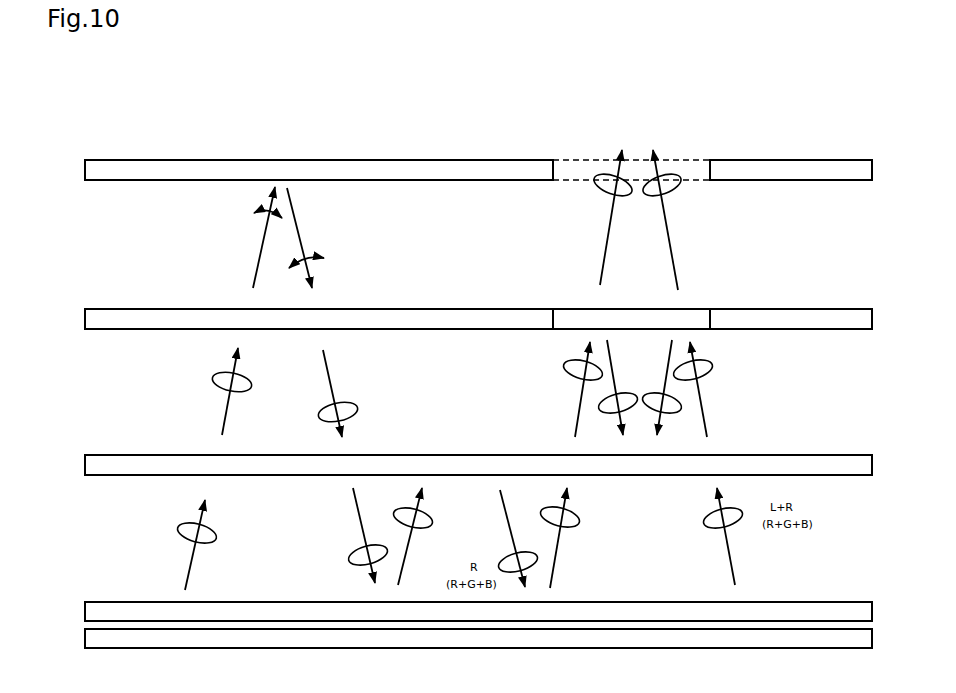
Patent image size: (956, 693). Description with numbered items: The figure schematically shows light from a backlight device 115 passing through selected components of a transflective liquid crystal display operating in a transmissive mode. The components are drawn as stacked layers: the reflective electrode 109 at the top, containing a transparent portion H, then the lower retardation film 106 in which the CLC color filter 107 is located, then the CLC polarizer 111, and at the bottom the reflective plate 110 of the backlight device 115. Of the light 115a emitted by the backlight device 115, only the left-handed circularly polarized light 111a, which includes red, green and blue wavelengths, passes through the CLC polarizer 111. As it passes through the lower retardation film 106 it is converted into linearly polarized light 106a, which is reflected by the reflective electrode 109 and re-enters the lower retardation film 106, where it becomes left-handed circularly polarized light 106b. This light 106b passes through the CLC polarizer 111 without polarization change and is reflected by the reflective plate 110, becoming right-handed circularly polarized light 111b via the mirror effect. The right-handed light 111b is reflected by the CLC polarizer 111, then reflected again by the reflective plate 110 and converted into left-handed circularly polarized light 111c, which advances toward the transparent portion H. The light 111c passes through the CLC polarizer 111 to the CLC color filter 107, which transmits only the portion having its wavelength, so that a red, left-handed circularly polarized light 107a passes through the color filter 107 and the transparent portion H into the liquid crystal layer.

The reflective electrode 109 is at (85, 165).
The transparent portion H is at (692, 175).
The lower retardation film 106 is at (85, 314).
The CLC color filter 107 is at (692, 318).
The red, left-handed circularly polarized light 107a is at (604, 256).
The linearly polarized light 106a is at (263, 250).
The left-handed circularly polarized light 106b is at (345, 403).
The CLC polarizer 111 is at (85, 461).
The left-handed circularly polarized light 111a is at (213, 380).
The right-handed circularly polarized light 111b is at (410, 547).
The left-handed circularly polarized light 111c is at (578, 406).
The reflective plate 110 is at (86, 608).
The backlight device 115 is at (85, 638).
The light 115a is at (188, 555).